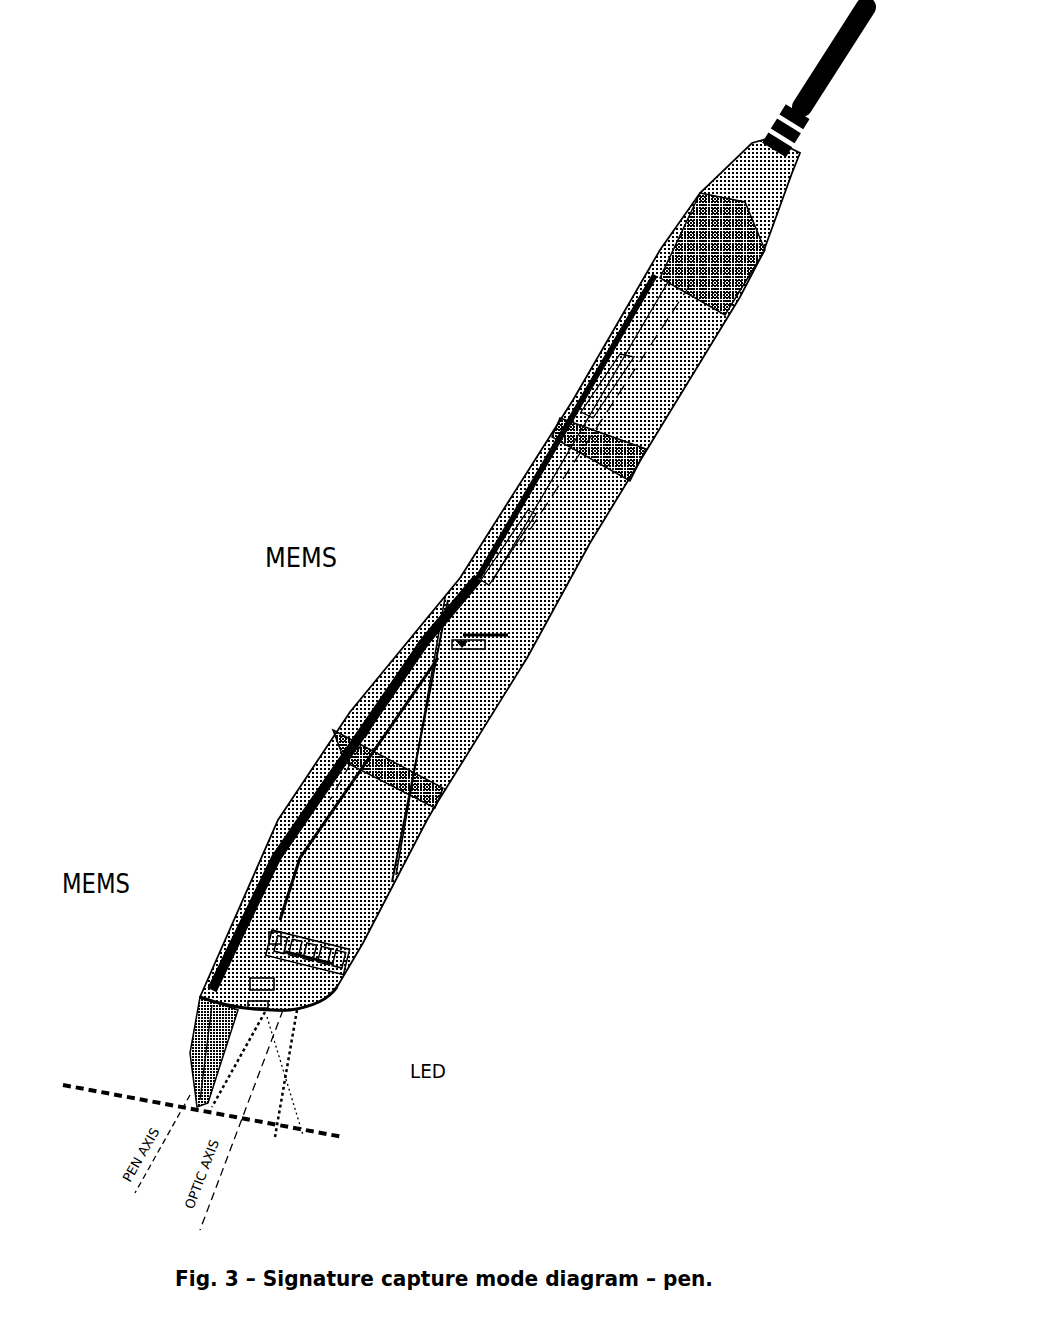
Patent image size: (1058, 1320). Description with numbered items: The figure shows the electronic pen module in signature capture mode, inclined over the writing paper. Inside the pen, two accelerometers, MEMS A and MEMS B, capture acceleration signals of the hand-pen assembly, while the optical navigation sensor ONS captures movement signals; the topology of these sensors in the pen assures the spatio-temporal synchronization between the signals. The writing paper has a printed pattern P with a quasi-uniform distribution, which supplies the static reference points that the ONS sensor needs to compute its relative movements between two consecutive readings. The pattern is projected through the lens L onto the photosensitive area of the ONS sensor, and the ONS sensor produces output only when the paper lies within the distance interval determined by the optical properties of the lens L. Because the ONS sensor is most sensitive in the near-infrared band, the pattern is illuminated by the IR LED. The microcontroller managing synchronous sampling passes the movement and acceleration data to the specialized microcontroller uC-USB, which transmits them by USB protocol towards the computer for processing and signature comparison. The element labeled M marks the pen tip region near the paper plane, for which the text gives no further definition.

The specialized microcontroller µC-USB uC-USB is at (600, 393).
The MEMS B is at (457, 637).
The optical navigation sensor ONS is at (277, 933).
The MEMS A is at (250, 982).
The pen tip / marker M is at (210, 1032).
The lens L is at (338, 983).
The IR LED IR is at (268, 1010).
The pattern P is at (212, 1104).